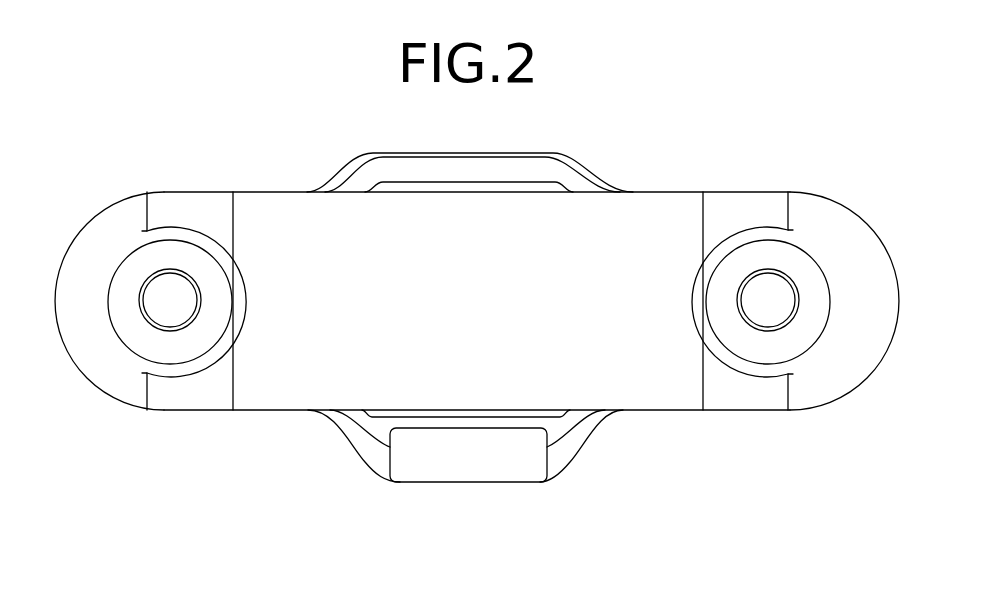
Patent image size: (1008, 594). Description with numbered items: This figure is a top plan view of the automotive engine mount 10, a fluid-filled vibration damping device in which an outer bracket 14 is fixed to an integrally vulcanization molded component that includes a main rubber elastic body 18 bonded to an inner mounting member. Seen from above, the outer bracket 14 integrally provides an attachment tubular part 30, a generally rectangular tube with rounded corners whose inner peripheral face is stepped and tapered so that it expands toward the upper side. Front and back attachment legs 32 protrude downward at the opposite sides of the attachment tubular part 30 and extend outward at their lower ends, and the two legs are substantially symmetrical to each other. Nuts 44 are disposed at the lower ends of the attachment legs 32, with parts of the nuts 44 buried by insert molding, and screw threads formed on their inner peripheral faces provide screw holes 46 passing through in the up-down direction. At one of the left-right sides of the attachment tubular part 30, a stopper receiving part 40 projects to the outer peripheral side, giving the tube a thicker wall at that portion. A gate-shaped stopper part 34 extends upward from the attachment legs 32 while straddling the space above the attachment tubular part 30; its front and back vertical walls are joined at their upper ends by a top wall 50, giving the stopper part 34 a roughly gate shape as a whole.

The engine mount 10 is at (770, 113).
The outer bracket 14 is at (658, 170).
The main rubber elastic body 18 is at (363, 427).
The attachment tubular part 30 is at (602, 175).
The attachment legs 32 is at (115, 370).
The gate-shaped stopper part 34 is at (707, 382).
The stopper receiving part 40 is at (562, 458).
The nuts 44 is at (133, 275).
The screw holes 46 is at (156, 278).
The top wall 50 is at (657, 383).